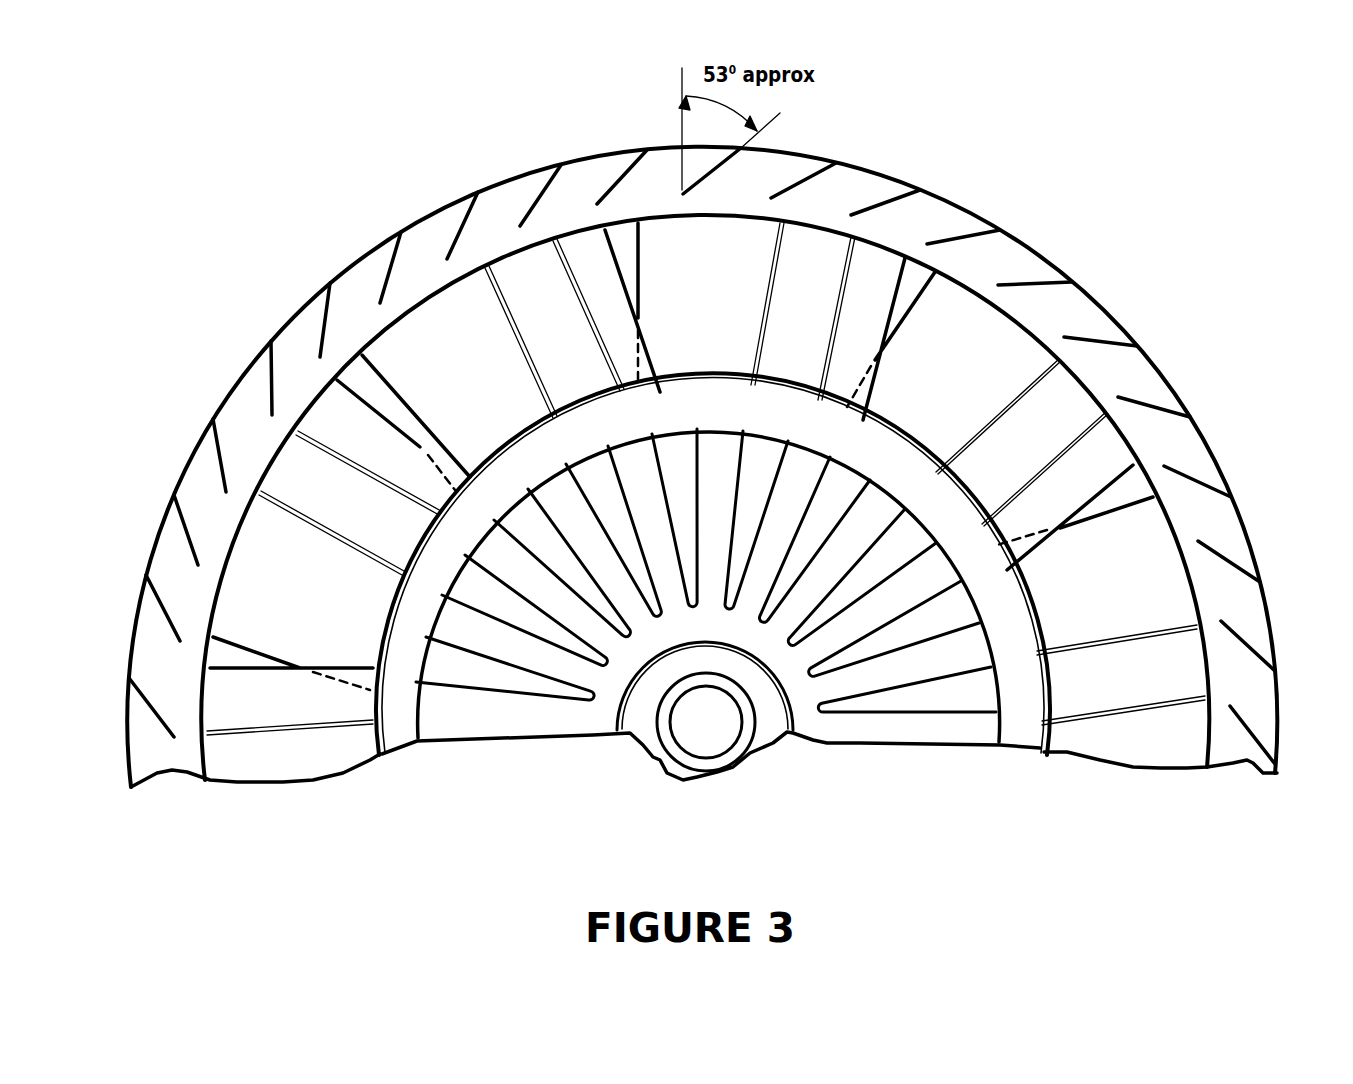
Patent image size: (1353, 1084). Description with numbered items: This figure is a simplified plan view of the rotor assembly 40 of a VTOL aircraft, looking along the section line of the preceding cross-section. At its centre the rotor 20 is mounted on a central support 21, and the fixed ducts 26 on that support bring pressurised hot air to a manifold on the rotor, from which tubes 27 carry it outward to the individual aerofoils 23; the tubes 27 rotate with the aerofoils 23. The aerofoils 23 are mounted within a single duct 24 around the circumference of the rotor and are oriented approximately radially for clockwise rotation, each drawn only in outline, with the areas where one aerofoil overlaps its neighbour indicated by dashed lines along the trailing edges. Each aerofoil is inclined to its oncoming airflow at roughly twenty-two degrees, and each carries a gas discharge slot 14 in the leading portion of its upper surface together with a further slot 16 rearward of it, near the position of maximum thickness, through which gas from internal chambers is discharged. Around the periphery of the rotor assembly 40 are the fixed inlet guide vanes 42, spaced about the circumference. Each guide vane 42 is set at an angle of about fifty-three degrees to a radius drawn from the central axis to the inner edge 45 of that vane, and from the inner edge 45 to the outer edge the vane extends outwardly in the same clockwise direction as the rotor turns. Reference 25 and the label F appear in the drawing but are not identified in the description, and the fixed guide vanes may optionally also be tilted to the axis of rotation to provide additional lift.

The gas discharge slot 14 is at (1110, 417).
The slot 16 is at (1057, 366).
The rotor 20 is at (981, 373).
The central support 21 is at (722, 735).
The aerofoils 23 is at (681, 456).
The duct 24 is at (290, 693).
The hub 25 is at (810, 712).
The fixed ducts 26 is at (772, 720).
The tubes 27 is at (895, 672).
The rotor assembly 40 is at (1117, 190).
The inlet guide vanes 42 is at (967, 233).
The inner edge 45 is at (678, 183).
The flow direction F is at (773, 241).